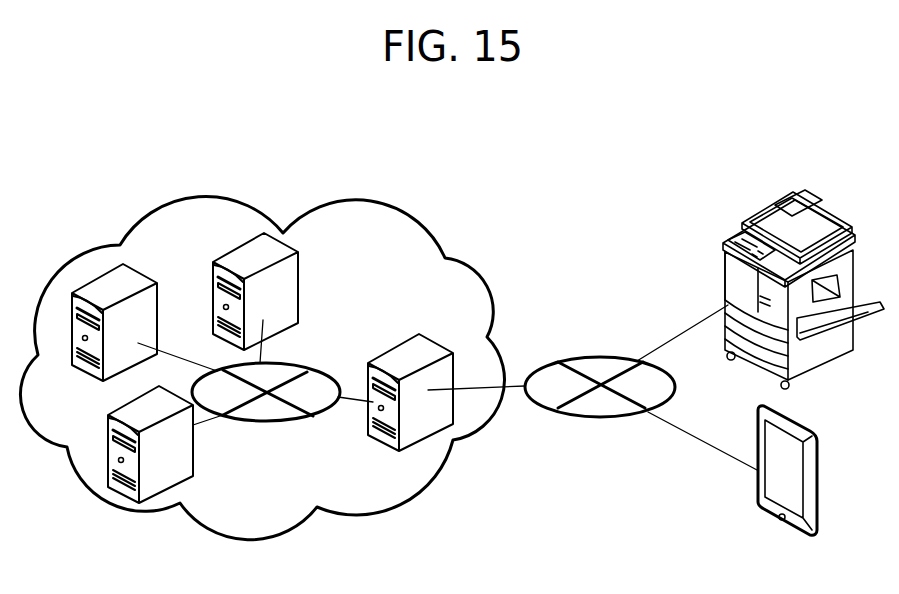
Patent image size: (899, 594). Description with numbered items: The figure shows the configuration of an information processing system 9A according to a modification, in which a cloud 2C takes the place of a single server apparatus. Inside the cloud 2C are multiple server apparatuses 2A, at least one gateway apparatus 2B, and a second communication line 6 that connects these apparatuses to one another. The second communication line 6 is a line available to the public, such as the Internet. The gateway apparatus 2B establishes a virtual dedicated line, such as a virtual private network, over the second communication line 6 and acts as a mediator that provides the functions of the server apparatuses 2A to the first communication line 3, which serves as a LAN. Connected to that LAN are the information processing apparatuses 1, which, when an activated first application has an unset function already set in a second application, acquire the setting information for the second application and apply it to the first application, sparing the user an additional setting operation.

The information processing apparatus 1 is at (737, 285).
The server apparatus 2A is at (133, 320).
The gateway apparatus 2B is at (407, 353).
The cloud 2C is at (185, 228).
The first communication line 3 is at (590, 357).
The second communication line 6 is at (315, 418).
The information processing system 9A is at (612, 206).